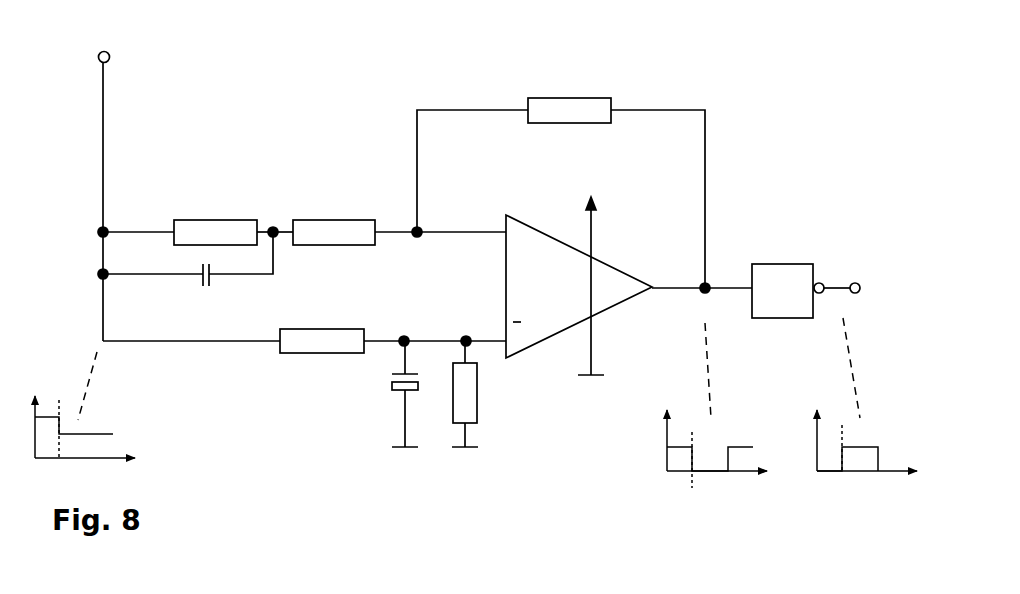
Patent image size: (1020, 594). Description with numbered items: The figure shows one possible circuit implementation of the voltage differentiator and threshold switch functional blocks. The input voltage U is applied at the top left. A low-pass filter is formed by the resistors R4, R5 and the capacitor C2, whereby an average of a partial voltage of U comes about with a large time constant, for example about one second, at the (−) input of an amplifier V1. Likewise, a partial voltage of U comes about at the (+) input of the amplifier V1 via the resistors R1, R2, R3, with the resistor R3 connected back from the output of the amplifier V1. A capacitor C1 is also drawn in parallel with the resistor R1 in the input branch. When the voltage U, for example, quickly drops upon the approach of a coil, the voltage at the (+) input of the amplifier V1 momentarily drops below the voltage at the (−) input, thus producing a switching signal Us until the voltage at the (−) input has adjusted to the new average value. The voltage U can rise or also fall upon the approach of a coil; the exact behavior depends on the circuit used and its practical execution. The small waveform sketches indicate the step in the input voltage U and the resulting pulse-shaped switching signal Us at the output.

The voltage U is at (105, 179).
The resistor R1 is at (188, 218).
The resistor R2 is at (389, 218).
The resistor R3 is at (561, 177).
The resistor R4 is at (304, 324).
The resistor R5 is at (484, 394).
The capacitor C1 is at (188, 275).
The capacitor C2 is at (388, 394).
The amplifier V1 is at (578, 279).
The switching signal Us is at (775, 291).